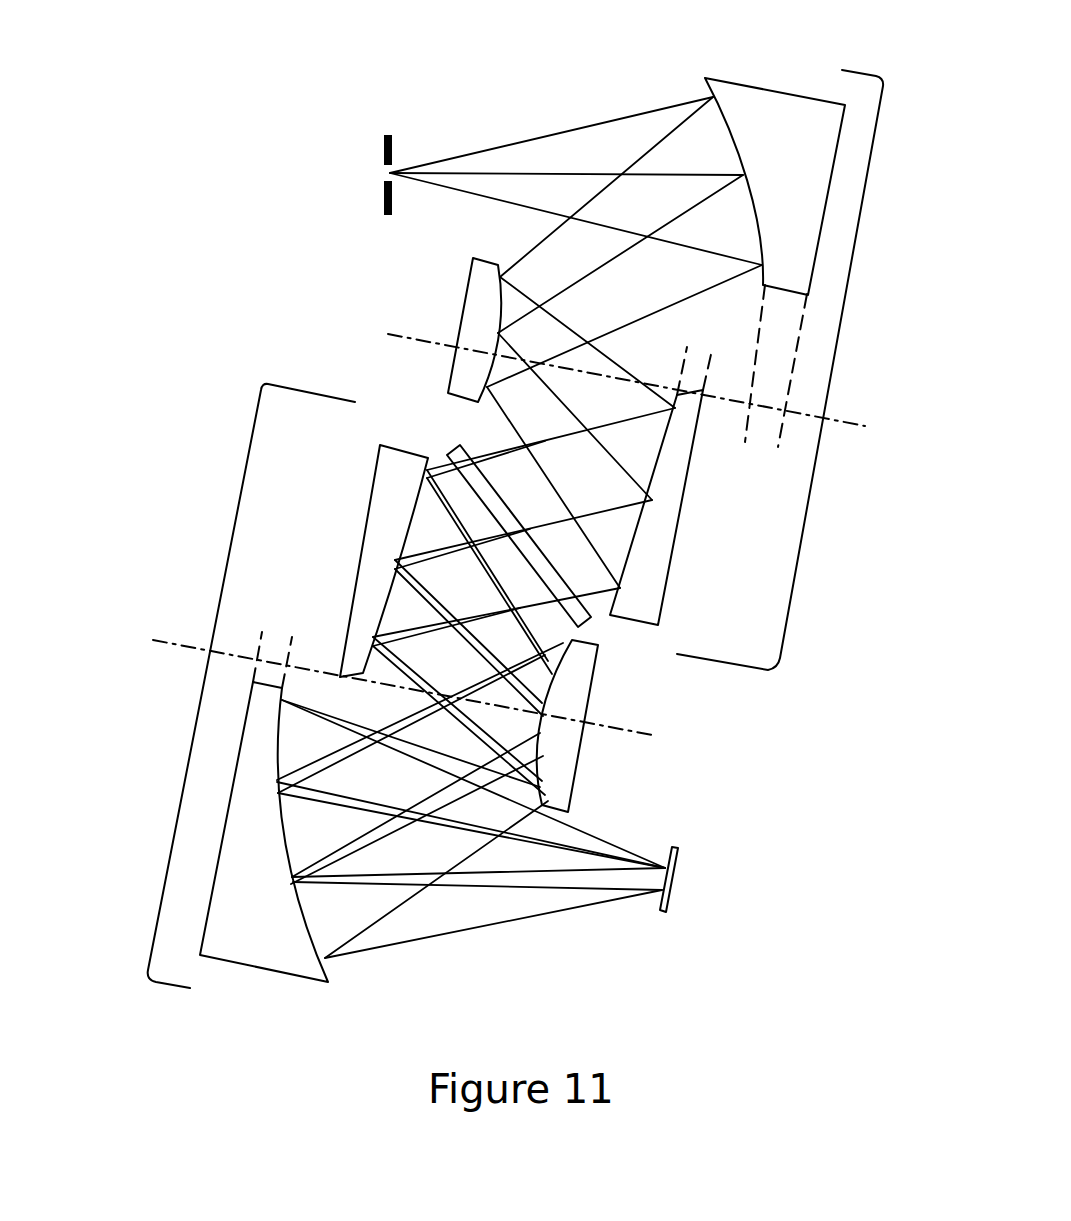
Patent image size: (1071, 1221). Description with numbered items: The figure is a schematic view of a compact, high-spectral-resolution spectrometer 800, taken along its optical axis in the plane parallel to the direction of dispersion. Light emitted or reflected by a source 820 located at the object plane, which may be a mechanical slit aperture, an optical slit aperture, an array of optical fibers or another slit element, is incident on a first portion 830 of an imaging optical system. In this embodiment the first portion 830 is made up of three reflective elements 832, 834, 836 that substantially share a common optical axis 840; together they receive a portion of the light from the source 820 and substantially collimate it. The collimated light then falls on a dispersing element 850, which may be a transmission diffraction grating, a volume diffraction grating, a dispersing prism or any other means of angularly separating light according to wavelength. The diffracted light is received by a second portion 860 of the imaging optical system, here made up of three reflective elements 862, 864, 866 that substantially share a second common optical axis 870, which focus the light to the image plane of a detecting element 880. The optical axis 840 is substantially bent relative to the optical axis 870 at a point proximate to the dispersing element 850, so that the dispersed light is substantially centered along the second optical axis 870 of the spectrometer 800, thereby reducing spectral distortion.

The spectrometer 800 is at (138, 78).
The source 820 is at (385, 194).
The first portion of the imaging optical system 830 is at (838, 303).
The reflective element 832 is at (778, 92).
The reflective element 834 is at (468, 294).
The reflective element 836 is at (675, 553).
The optical axis 840 is at (887, 430).
The dispersing element 850 is at (452, 444).
The second portion of the imaging optical system 860 is at (190, 740).
The reflective element 862 is at (366, 523).
The reflective element 864 is at (573, 775).
The reflective element 866 is at (262, 976).
The optical axis 870 is at (160, 639).
The detecting element 880 is at (678, 880).